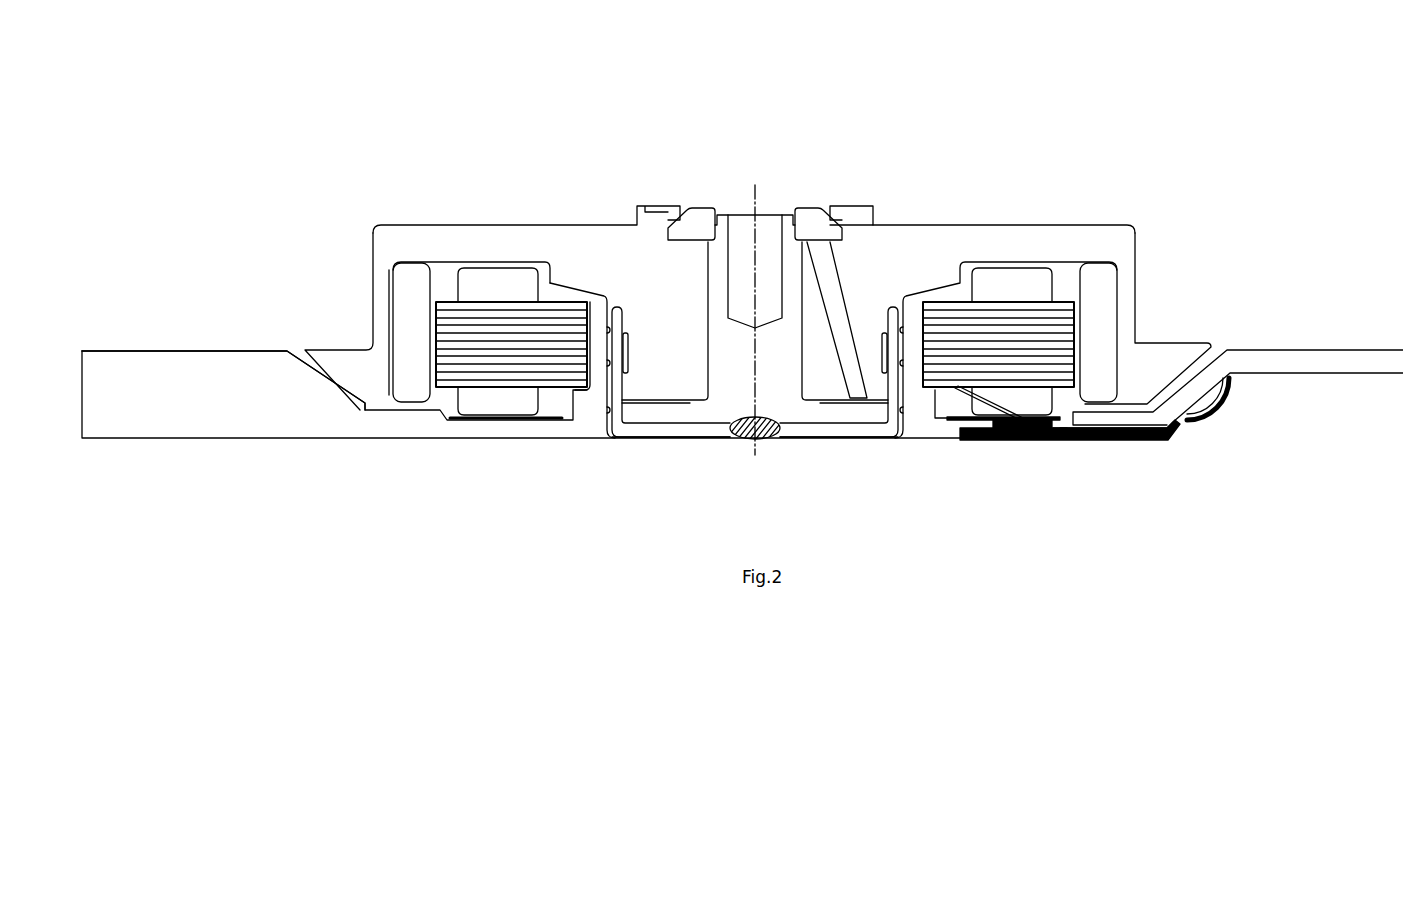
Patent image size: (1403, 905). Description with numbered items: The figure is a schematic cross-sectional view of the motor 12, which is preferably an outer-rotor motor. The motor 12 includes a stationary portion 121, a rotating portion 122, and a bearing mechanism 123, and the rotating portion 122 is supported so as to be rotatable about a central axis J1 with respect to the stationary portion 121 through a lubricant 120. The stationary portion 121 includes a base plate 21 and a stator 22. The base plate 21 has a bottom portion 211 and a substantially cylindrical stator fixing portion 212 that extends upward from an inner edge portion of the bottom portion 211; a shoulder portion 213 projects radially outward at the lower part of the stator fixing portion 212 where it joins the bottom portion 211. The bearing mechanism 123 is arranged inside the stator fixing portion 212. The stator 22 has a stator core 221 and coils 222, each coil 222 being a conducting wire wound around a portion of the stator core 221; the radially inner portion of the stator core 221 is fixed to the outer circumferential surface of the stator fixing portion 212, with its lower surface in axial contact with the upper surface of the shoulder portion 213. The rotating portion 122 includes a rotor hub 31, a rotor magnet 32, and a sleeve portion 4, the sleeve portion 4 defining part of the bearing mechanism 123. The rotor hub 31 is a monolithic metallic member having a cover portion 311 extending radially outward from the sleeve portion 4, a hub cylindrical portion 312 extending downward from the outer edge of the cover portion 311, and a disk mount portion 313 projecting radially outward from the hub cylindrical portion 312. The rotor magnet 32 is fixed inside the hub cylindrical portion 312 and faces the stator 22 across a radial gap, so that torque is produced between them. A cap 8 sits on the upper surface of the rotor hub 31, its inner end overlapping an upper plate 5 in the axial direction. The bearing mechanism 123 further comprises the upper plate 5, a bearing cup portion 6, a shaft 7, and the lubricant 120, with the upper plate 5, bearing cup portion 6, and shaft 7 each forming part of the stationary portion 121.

The motor 12 is at (803, 50).
The rotating portion 122 is at (190, 130).
The stationary portion 121 is at (1190, 489).
The bearing mechanism 123 is at (708, 455).
The lubricant 120 is at (643, 395).
The sleeve portion 4 is at (657, 313).
The cap 8 is at (663, 210).
The shaft 7 is at (738, 347).
The upper plate 5 is at (812, 217).
The central axis J1 is at (756, 331).
The bearing cup portion 6 is at (833, 430).
The rotor hub 31 is at (257, 165).
The cover portion 311 is at (487, 247).
The hub cylindrical portion 312 is at (383, 312).
The disk mount portion 313 is at (350, 360).
The rotor magnet 32 is at (410, 347).
The stator 22 is at (1078, 153).
The coils 222 is at (1012, 283).
The stator core 221 is at (1023, 340).
The base plate 21 is at (867, 502).
The bottom portion 211 is at (1073, 420).
The stator fixing portion 212 is at (913, 333).
The shoulder portion 213 is at (923, 407).